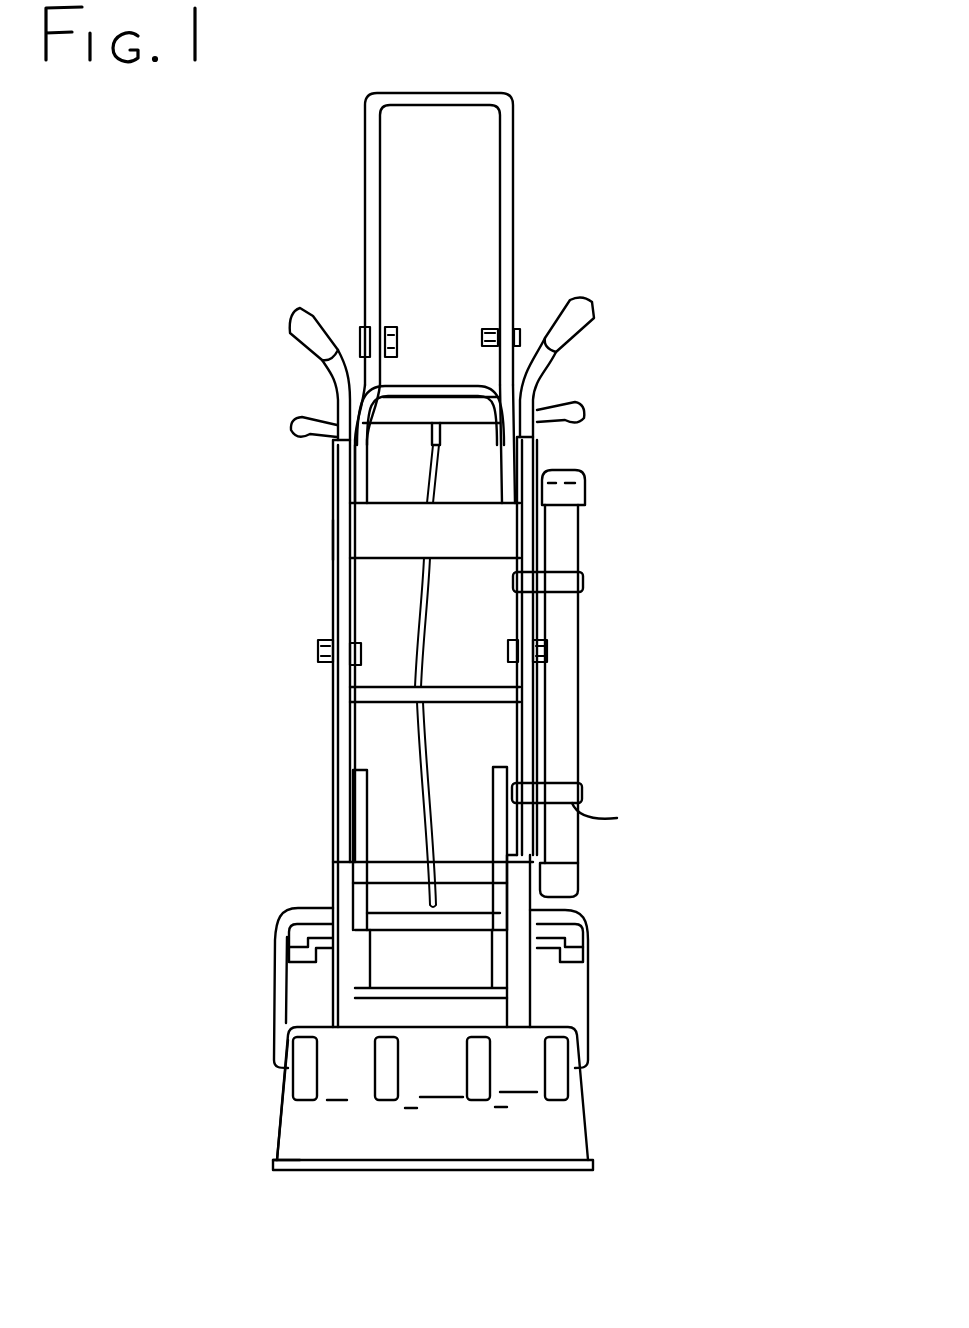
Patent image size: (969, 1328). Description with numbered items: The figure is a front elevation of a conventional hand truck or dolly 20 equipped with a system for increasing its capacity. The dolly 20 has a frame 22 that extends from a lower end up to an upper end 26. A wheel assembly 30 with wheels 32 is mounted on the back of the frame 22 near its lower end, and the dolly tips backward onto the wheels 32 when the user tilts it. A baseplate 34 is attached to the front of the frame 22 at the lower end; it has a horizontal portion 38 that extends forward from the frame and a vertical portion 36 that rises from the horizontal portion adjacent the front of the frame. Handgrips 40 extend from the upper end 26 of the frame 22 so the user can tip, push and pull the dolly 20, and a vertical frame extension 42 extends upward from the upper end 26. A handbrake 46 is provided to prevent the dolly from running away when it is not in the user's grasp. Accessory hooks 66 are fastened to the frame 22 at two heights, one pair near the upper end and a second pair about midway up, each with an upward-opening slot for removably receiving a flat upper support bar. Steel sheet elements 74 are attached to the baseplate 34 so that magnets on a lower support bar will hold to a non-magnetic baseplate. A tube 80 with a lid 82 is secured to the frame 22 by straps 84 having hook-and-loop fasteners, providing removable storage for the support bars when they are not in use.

The hand truck or dolly 20 is at (333, 522).
The frame 22 is at (333, 755).
The upper end of the frame 26 is at (533, 445).
The wheel assembly 30 is at (590, 982).
The wheels 32 is at (270, 990).
The baseplate 34 is at (585, 1133).
The vertical portion of the baseplate 36 is at (287, 1053).
The horizontal portion of the baseplate 38 is at (273, 1147).
The handgrips 40 is at (287, 337).
The vertical frame extension 42 is at (515, 203).
The handbrake 46 is at (565, 403).
The accessory hooks 66 is at (387, 357).
The steel sheet elements 74 is at (578, 1053).
The tube 80 is at (580, 733).
The lid 82 is at (585, 492).
The straps 84 is at (565, 593).